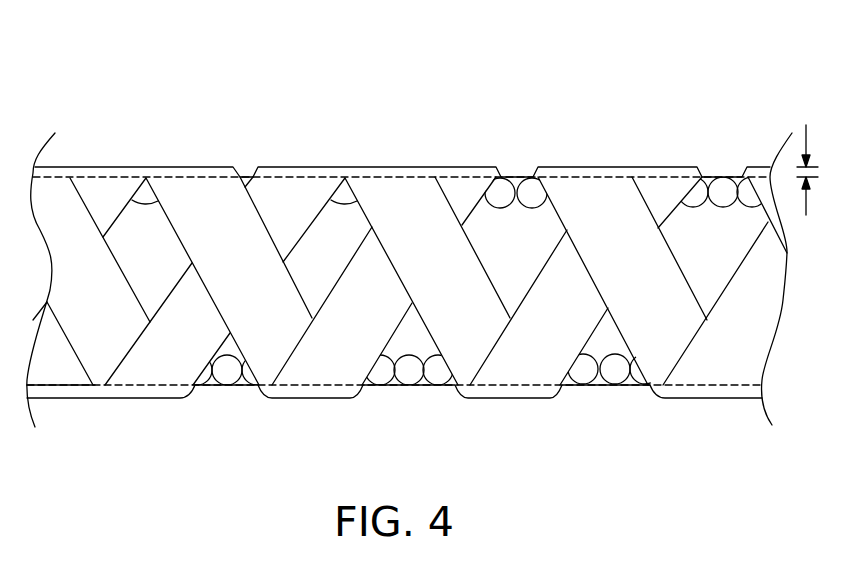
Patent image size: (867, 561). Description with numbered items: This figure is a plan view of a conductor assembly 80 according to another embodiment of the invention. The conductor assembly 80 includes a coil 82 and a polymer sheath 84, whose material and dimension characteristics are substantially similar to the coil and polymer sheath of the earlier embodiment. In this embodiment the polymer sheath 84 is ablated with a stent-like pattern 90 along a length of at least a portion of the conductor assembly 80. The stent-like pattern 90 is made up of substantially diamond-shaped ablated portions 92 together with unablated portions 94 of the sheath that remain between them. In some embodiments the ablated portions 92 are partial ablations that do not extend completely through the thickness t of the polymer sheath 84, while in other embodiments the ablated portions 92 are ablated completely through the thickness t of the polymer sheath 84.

The conductor assembly 80 is at (684, 112).
The coil 82 is at (507, 188).
The polymer sheath 84 is at (288, 193).
The stent-like pattern 90 is at (142, 226).
The ablated portions 92 is at (343, 227).
The unablated portions 94 is at (278, 343).